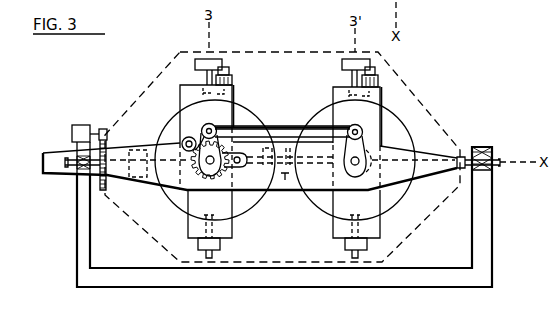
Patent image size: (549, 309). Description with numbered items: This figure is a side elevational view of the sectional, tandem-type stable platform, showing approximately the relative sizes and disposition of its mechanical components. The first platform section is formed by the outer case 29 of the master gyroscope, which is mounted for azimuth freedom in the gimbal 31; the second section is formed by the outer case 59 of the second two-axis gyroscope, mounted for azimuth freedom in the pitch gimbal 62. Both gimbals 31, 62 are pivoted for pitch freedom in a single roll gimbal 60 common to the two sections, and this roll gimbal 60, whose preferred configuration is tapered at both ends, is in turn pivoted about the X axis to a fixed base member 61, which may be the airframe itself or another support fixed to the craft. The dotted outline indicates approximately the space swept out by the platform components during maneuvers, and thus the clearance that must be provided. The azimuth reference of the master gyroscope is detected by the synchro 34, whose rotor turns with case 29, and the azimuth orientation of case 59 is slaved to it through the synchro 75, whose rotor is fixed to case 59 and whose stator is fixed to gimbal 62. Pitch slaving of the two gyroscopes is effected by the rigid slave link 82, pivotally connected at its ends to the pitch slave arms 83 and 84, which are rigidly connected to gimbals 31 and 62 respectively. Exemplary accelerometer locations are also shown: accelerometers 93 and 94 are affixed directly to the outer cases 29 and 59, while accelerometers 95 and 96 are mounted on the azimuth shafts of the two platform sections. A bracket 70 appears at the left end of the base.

The outer case 29 is at (250, 204).
The gimbal 31 is at (222, 233).
The synchro 34 is at (218, 243).
The outer case 59 is at (410, 178).
The roll gimbal 60 is at (118, 150).
The fixed base member 61 is at (480, 237).
The pitch gimbal 62 is at (340, 222).
The bracket 70 is at (80, 128).
The synchro 75 is at (350, 243).
The rigid slave link 82 is at (277, 127).
The pitch slave arm 83 is at (213, 132).
The pitch slave arm 84 is at (360, 151).
The accelerometer 93 is at (136, 172).
The accelerometer 94 is at (266, 181).
The accelerometer 95 is at (216, 63).
The accelerometer 96 is at (352, 63).